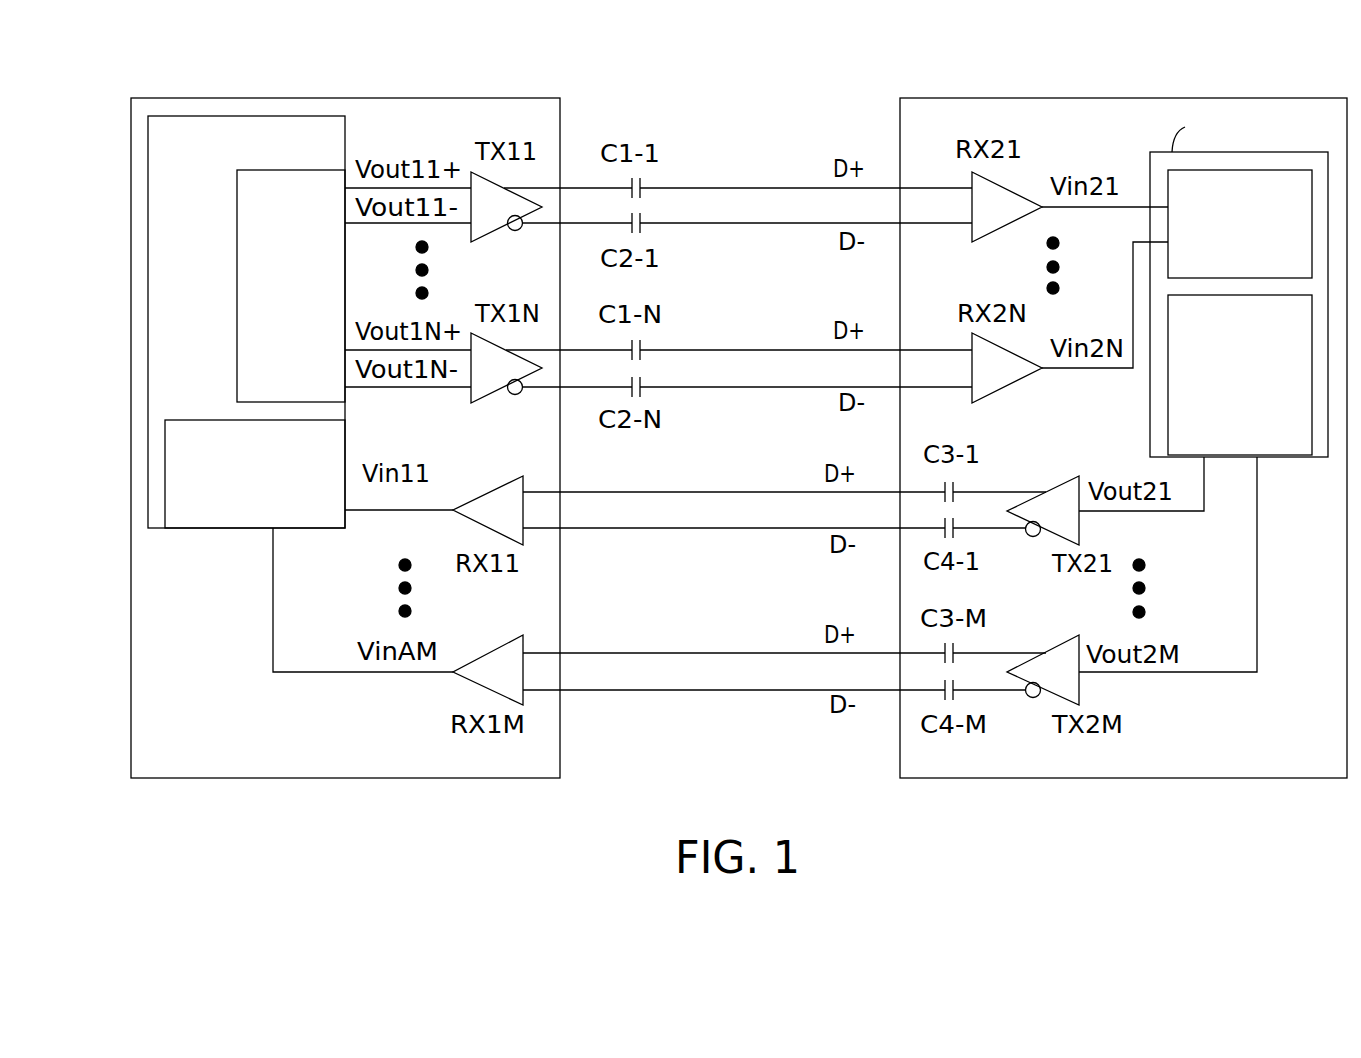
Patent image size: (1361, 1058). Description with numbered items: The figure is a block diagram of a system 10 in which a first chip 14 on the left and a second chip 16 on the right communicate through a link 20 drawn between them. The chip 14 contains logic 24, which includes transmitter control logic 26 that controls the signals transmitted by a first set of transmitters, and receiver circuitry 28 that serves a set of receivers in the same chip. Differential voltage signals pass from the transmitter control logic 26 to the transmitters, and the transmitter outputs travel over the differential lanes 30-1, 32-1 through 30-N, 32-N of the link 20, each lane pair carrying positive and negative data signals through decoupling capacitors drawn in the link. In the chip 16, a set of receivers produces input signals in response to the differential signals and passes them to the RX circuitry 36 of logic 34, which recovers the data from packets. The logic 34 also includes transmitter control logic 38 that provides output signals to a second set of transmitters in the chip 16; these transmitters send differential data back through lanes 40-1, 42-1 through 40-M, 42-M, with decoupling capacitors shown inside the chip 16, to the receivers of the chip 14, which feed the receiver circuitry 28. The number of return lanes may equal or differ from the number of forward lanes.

The system 10 is at (366, 51).
The chip 14 is at (167, 98).
The chip 16 is at (997, 98).
The link 20 is at (641, 73).
The logic 24 is at (246, 322).
The transmitter control logic 26 is at (291, 286).
The receiver circuitry 28 is at (255, 474).
The differential lane 30-1 is at (712, 188).
The differential lane 30-N is at (712, 350).
The differential lane 32-1 is at (712, 223).
The differential lane 32-N is at (712, 387).
The logic 34 is at (1267, 152).
The RX circuitry 36 is at (1240, 224).
The transmitter control logic 38 is at (1240, 375).
The lane 40-1 is at (702, 492).
The lane 40-M is at (702, 653).
The lane 42-1 is at (702, 528).
The lane 42-M is at (702, 690).